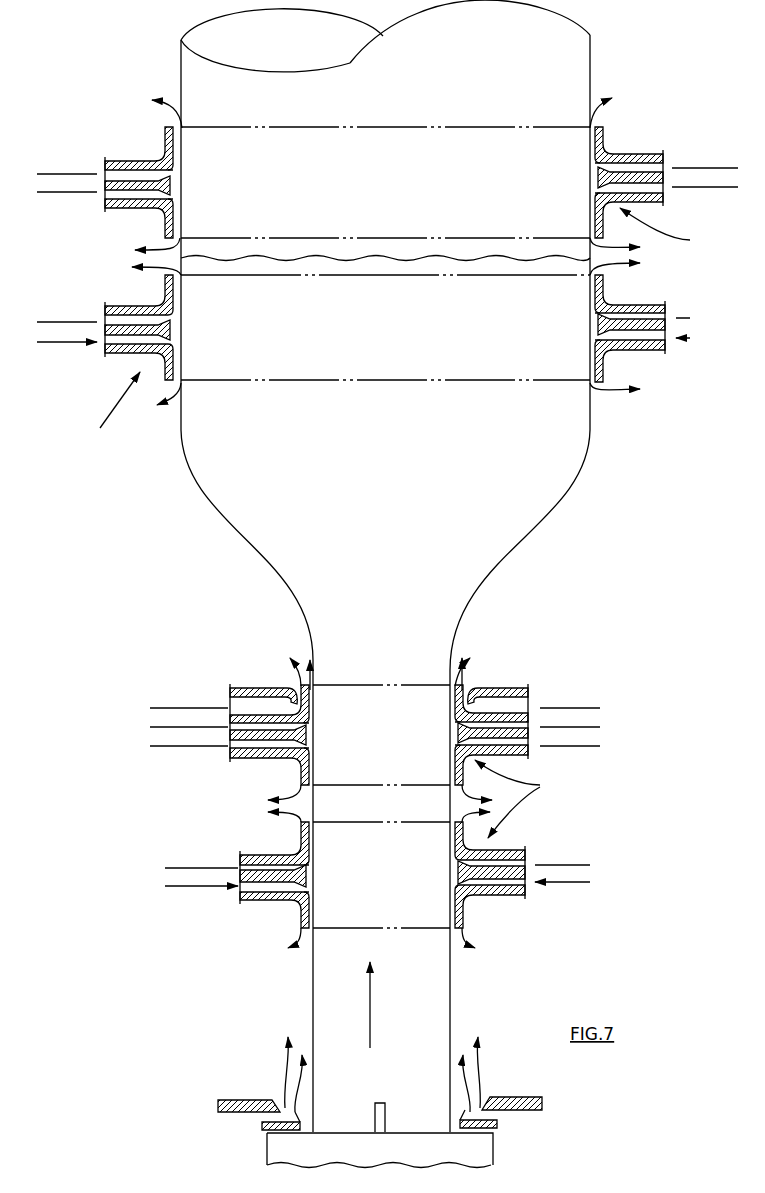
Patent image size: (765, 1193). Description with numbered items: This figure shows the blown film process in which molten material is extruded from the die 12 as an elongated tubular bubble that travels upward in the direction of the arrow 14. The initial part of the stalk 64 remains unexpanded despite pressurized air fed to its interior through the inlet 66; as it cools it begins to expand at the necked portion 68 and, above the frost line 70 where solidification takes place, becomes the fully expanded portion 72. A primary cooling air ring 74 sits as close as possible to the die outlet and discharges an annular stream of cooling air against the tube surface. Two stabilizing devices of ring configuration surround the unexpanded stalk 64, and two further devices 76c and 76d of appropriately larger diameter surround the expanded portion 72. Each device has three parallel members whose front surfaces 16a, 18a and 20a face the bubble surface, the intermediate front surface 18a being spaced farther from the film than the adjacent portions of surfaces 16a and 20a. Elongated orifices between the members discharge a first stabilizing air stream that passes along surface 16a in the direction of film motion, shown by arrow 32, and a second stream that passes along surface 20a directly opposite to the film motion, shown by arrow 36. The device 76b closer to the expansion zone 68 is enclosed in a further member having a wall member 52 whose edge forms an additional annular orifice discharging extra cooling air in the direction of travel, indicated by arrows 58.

The die 12 is at (485, 1150).
The gas flow direction 14 is at (372, 1010).
The front surface of first member 16a is at (598, 142).
The front surface of intermediate member 18a is at (172, 182).
The front surface of third member 20a is at (598, 207).
The arrow indicating first stabilizing stream 32 is at (173, 162).
The arrow indicating second stabilizing stream 36 is at (175, 205).
The wall member 52 is at (500, 690).
The arrows indicating additional air stream 58 is at (468, 672).
The initial part of bubble stalk 64 is at (440, 993).
The inlet 66 is at (386, 1112).
The necked portion 68 is at (385, 410).
The frost line 70 is at (425, 262).
The fully expanded portion 72 is at (385, 81).
The primary cooling air ring 74 is at (522, 1098).
The stabilizing device 76b is at (524, 799).
The stabilizing device 76c is at (106, 411).
The stabilizing device 76d is at (670, 230).